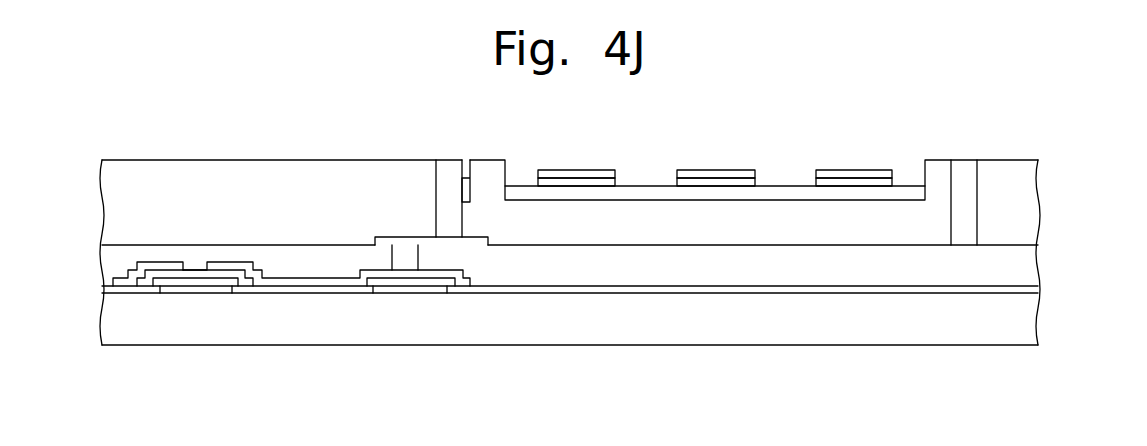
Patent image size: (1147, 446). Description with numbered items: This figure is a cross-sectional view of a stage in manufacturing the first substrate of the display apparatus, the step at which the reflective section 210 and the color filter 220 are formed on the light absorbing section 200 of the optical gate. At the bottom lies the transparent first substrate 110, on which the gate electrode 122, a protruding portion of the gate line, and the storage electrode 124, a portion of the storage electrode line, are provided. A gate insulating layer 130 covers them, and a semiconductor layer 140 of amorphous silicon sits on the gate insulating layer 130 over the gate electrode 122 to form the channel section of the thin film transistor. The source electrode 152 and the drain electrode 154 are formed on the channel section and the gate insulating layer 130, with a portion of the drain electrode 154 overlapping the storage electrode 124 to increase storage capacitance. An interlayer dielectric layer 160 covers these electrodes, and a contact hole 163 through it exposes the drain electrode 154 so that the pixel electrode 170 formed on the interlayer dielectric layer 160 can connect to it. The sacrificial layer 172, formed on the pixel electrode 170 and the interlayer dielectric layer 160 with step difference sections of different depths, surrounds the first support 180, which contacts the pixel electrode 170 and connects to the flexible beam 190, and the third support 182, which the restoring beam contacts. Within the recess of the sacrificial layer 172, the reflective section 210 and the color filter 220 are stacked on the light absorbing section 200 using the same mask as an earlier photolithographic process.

The first substrate 110 is at (1033, 320).
The gate electrode 122 is at (185, 290).
The storage electrode 124 is at (392, 288).
The gate insulating layer 130 is at (1033, 289).
The semiconductor layer 140 is at (247, 283).
The source electrode 152 is at (123, 283).
The drain electrode 154 is at (318, 283).
The interlayer dielectric layer 160 is at (1033, 265).
The contact hole 163 is at (418, 255).
The pixel electrode 170 is at (478, 245).
The sacrificial layer 172 is at (1033, 207).
The first support 180 is at (448, 168).
The third support 182 is at (963, 172).
The flexible beam 190 is at (465, 188).
The light absorbing section 200 is at (783, 193).
The reflective section 210 is at (592, 183).
The color filter 220 is at (553, 172).